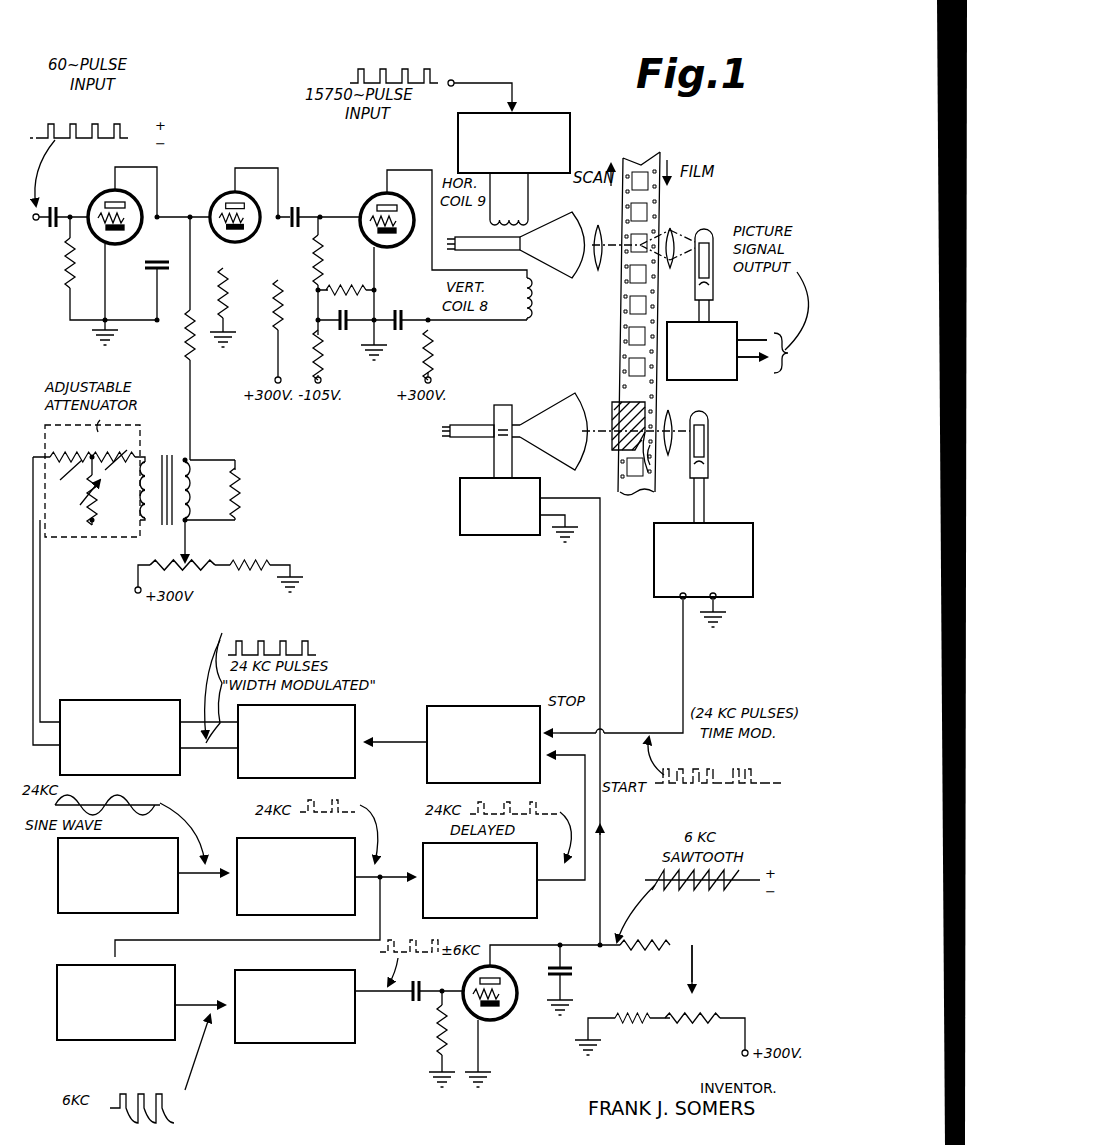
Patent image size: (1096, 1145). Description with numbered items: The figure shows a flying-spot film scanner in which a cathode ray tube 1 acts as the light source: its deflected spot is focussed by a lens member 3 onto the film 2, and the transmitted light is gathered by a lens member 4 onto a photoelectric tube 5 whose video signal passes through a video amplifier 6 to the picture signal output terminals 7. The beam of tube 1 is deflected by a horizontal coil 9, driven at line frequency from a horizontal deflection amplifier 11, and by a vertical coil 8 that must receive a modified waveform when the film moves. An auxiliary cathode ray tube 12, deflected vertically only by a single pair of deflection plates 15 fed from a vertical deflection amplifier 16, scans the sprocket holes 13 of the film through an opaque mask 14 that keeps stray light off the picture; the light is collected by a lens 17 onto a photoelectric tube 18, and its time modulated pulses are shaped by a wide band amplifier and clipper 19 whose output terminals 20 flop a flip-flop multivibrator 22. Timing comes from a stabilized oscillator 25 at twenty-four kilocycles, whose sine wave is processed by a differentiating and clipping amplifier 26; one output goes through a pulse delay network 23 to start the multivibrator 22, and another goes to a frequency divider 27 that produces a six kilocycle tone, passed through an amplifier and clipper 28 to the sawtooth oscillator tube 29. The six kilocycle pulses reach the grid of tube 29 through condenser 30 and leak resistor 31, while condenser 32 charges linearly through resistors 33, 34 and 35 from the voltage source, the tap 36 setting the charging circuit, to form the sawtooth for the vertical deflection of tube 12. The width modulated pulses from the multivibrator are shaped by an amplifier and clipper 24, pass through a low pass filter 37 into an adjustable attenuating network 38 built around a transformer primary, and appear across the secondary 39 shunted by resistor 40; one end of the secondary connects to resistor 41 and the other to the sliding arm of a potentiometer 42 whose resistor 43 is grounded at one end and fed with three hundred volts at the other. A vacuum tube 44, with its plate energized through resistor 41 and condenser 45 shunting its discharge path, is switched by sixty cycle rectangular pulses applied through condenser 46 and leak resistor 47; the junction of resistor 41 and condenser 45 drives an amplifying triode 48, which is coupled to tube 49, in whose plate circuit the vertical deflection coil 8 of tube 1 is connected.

The cathode ray tube 1 is at (557, 280).
The film 2 is at (650, 165).
The lens member 3 is at (600, 275).
The lens member 4 is at (673, 227).
The photoelectric tube 5 is at (708, 228).
The amplifier 6 is at (725, 322).
The output terminals 7 is at (762, 370).
The vertical deflection coil 8 is at (520, 290).
The horizontal deflection coil 9 is at (498, 220).
The horizontal deflection amplifier 11 is at (553, 112).
The auxiliary cathode ray tube 12 is at (552, 395).
The sprocket holes 13 is at (650, 455).
The opaque mask 14 is at (615, 402).
The deflection plates 15 is at (517, 406).
The vertical deflection amplifier 16 is at (500, 537).
The lens 17 is at (672, 412).
The photoelectric tube 18 is at (715, 433).
The wide band amplifier and clipper 19 is at (740, 523).
The output terminals 20 is at (686, 600).
The flip-flop multivibrator 22 is at (505, 704).
The pulse delay network 23 is at (537, 907).
The amplifier and clipper circuit 24 is at (238, 776).
The stabilized oscillator 25 is at (58, 863).
The differentiating and clipping amplifier 26 is at (237, 898).
The frequency divider 27 is at (57, 975).
The amplifier and clipper 28 is at (283, 1045).
The sawtooth oscillator tube 29 is at (505, 1018).
The condenser 30 is at (418, 1003).
The leak resistor 31 is at (437, 1043).
The condenser 32 is at (545, 970).
The resistor 33 is at (655, 942).
The resistor 34 is at (715, 1010).
The resistor 35 is at (633, 1012).
The potentiometer tap 36 is at (695, 967).
The low pass filter 37 is at (120, 698).
The attenuating network 38 is at (78, 538).
The transformer secondary 39 is at (203, 468).
The resistor 40 is at (243, 492).
The resistor 41 is at (185, 346).
The potentiometer 42 is at (195, 560).
The resistor 43 is at (255, 560).
The vacuum tube 44 is at (160, 167).
The condenser 45 is at (145, 268).
The condenser 46 is at (52, 227).
The leak resistor 47 is at (65, 274).
The amplifying triode 48 is at (215, 195).
The tube 49 is at (374, 196).